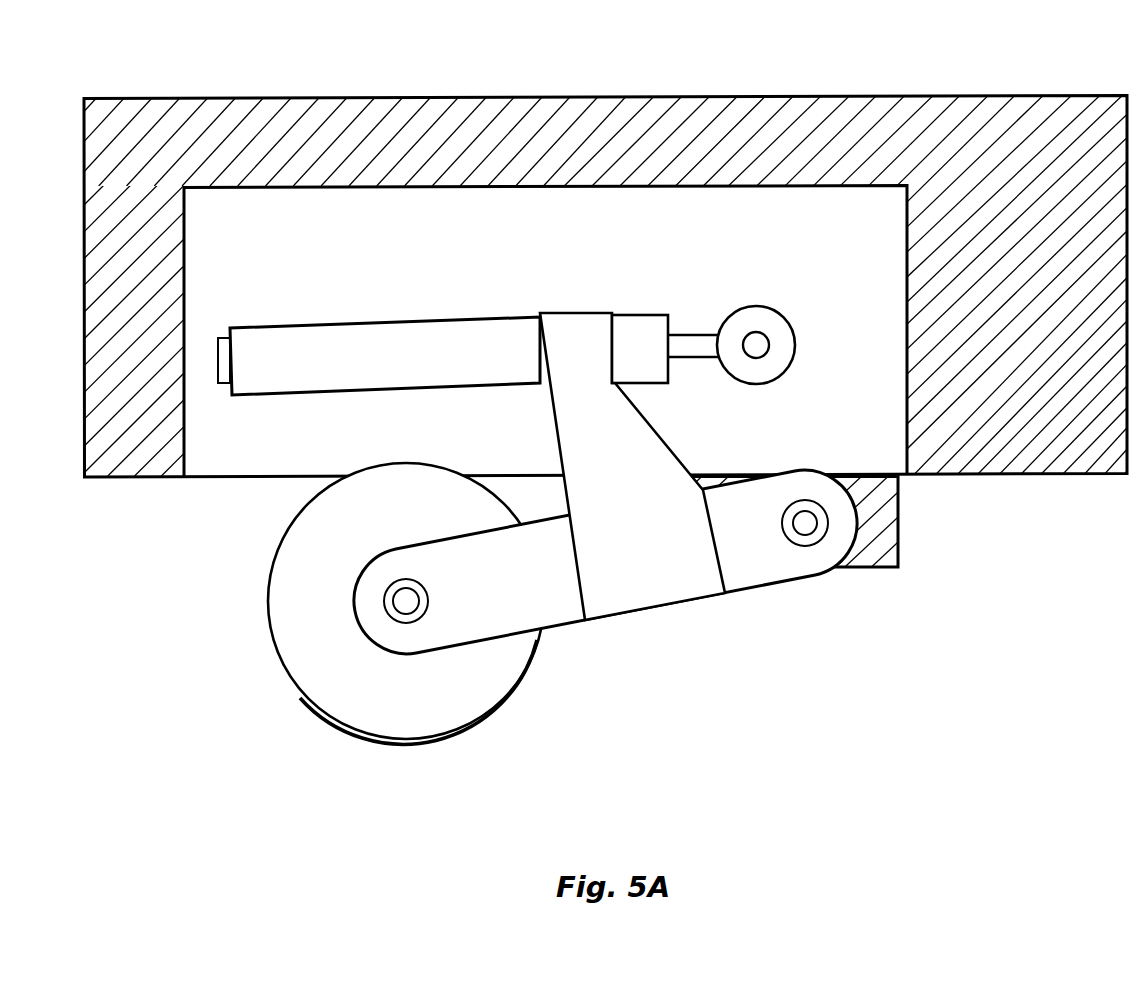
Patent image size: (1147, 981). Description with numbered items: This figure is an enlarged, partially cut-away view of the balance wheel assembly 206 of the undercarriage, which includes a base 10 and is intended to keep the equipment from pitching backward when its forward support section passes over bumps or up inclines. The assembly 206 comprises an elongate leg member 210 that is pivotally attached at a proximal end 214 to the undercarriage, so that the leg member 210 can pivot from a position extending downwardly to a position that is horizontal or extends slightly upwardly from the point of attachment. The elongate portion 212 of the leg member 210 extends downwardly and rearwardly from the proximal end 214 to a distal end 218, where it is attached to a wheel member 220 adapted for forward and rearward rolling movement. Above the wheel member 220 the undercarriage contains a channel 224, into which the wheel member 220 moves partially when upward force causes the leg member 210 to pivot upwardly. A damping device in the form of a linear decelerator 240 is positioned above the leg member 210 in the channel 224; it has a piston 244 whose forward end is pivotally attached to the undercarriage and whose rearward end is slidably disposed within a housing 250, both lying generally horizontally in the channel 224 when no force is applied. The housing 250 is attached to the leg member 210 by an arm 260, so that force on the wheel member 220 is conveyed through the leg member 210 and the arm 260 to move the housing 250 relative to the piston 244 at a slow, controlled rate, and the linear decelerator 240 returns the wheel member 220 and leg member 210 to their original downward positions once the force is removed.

The base 10 is at (571, 295).
The balance wheel assembly 206 is at (533, 565).
The leg member 210 is at (605, 529).
The arm 212 is at (755, 573).
The proximal end 214 is at (805, 541).
The distal end 218 is at (406, 603).
The wheel member 220 is at (316, 679).
The channel 224 is at (332, 254).
The linear decelerator 240 is at (506, 310).
The piston 244 is at (700, 330).
The housing 250 is at (377, 335).
The arm 260 is at (630, 466).